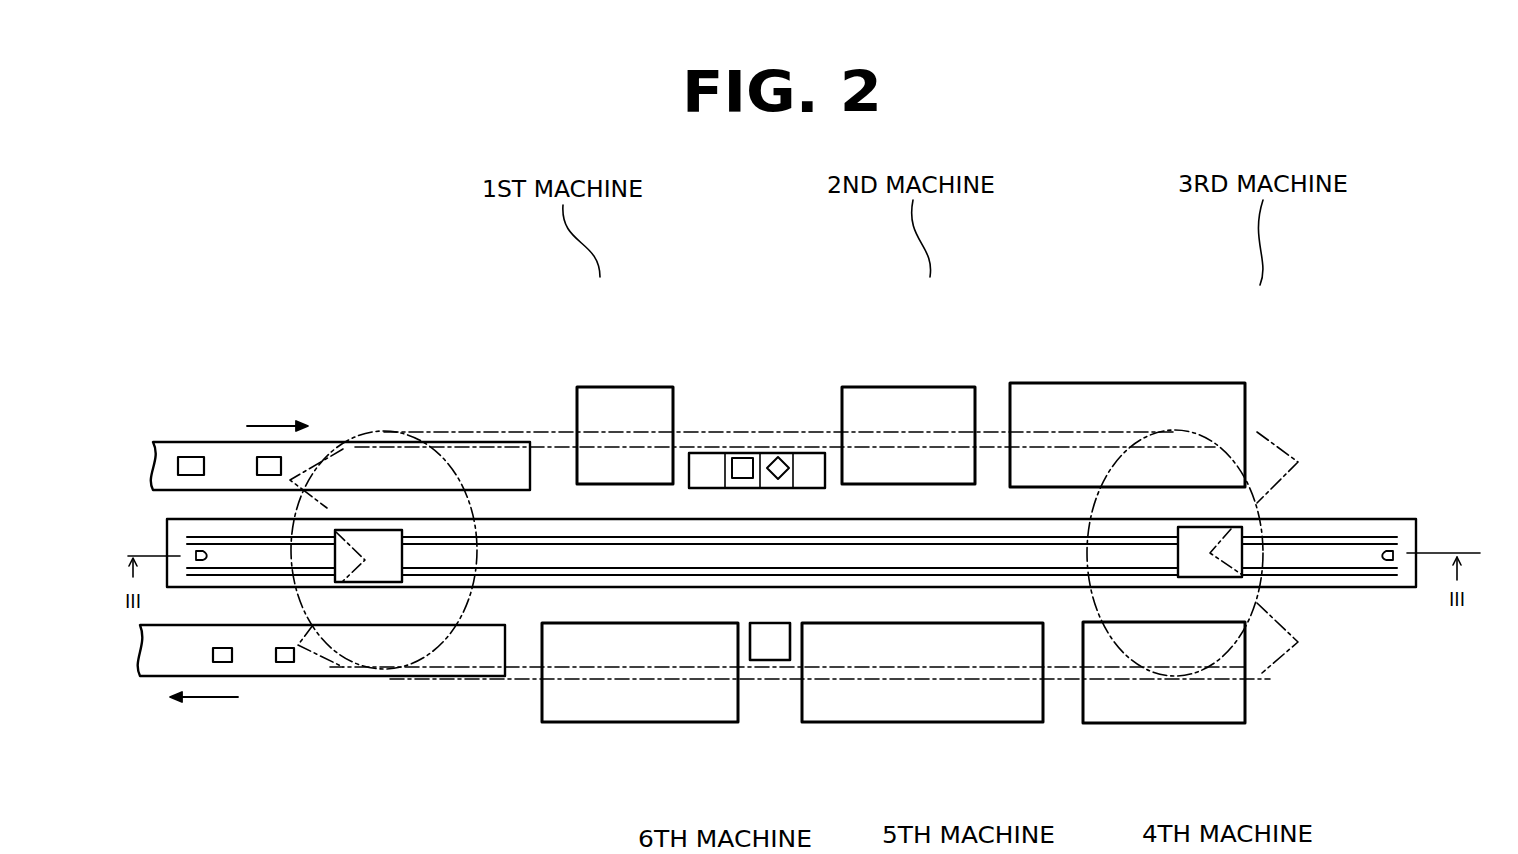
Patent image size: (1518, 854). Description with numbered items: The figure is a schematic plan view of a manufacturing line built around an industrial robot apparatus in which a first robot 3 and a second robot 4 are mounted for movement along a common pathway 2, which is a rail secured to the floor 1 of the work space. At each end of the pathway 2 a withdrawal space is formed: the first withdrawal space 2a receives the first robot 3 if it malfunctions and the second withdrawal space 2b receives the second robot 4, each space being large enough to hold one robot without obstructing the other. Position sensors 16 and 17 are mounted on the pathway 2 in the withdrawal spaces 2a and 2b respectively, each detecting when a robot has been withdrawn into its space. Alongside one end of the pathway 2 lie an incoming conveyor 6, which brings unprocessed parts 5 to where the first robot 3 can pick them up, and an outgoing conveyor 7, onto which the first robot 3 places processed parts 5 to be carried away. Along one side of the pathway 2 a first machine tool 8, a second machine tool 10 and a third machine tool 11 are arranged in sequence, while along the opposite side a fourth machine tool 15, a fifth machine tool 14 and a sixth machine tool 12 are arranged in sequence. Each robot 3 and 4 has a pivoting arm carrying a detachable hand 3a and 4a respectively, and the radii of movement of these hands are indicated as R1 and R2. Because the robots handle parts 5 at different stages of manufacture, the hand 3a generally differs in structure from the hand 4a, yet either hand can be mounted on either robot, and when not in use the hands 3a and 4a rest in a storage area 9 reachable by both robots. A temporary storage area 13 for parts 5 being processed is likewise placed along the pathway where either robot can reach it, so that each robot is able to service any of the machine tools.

The floor 1 is at (1025, 263).
The common pathway 2 is at (557, 519).
The first withdrawal space 2a is at (235, 557).
The second withdrawal space 2b is at (1342, 557).
The first robot 3 is at (335, 562).
The detachable hand of first robot 3a is at (740, 458).
The second robot 4 is at (1282, 550).
The detachable hand of second robot 4a is at (778, 457).
The parts 5 is at (192, 458).
The incoming conveyor 6 is at (223, 442).
The outgoing conveyor 7 is at (335, 676).
The first machine tool 8 is at (627, 387).
The storage area 9 is at (813, 453).
The second machine tool 10 is at (890, 387).
The third machine tool 11 is at (1178, 383).
The sixth machine tool 12 is at (635, 722).
The temporary storage area 13 is at (770, 660).
The fifth machine tool 14 is at (975, 722).
The fourth machine tool 15 is at (1185, 723).
The position sensor 16 is at (215, 557).
The position sensor 17 is at (1393, 557).
The radius of movement of first robot hand R1 is at (330, 597).
The radius of movement of second robot hand R2 is at (1267, 603).